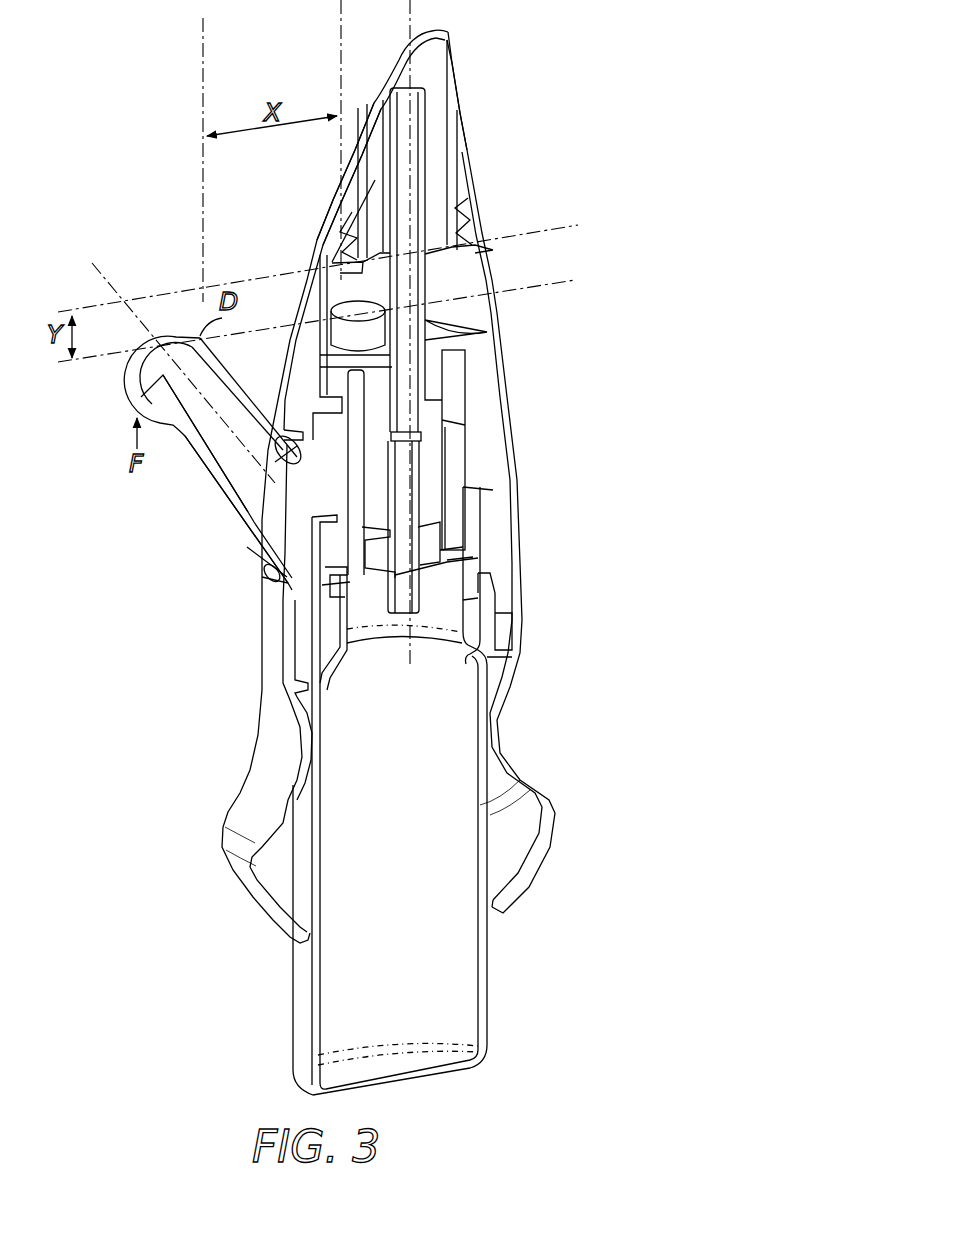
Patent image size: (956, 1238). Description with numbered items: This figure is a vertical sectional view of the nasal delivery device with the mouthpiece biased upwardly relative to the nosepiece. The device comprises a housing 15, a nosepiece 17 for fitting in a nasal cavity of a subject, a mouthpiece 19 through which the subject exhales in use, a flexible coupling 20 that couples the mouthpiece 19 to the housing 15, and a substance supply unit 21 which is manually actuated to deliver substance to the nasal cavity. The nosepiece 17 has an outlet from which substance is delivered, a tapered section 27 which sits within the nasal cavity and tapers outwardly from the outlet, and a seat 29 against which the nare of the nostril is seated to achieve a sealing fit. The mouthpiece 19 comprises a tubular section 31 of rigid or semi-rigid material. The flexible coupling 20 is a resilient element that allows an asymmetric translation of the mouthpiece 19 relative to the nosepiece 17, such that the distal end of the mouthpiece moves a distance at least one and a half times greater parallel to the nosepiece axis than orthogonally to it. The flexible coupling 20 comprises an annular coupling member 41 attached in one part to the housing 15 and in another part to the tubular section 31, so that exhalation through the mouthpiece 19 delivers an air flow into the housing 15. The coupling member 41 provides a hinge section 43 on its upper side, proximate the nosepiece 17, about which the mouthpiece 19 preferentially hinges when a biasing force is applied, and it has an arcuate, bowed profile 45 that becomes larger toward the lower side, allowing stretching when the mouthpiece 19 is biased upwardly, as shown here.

The housing 15 is at (536, 530).
The nosepiece 17 is at (470, 110).
The mouthpiece 19 is at (173, 485).
The flexible coupling 20 is at (236, 575).
The substance supply unit 21 is at (509, 976).
The tapered section 27 is at (470, 147).
The seat 29 is at (322, 208).
The tubular section 31 is at (216, 495).
The annular coupling member 41 is at (258, 548).
The hinge section 43 is at (277, 440).
The arcuate, bowed profile 45 is at (266, 584).